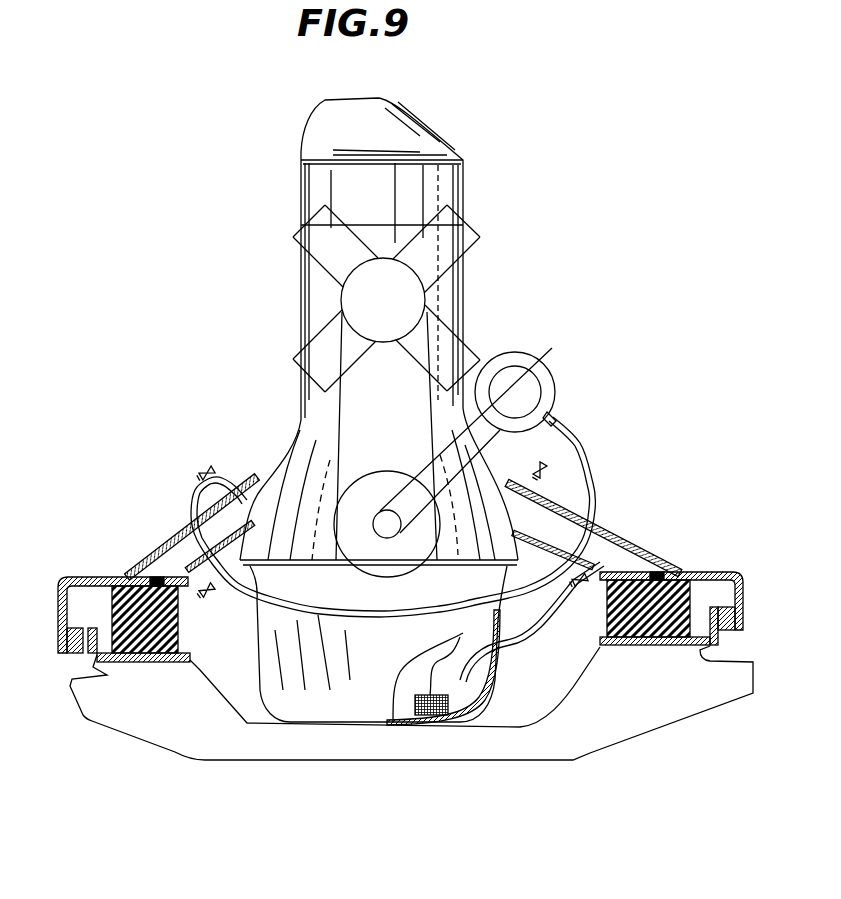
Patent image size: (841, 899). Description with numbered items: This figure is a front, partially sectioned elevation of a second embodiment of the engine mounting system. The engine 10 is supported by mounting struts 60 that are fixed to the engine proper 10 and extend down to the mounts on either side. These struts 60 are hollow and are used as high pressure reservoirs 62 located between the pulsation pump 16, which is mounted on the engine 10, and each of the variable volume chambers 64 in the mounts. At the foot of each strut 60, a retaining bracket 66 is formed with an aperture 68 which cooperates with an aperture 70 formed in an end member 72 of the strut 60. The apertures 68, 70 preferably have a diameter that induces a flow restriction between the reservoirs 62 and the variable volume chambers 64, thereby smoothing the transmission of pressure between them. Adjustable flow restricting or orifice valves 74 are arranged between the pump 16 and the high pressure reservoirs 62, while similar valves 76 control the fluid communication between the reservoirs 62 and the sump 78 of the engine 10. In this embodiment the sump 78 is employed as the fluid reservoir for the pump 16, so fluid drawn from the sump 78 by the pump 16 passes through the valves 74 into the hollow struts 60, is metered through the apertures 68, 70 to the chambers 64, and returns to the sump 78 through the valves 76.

The engine 10 is at (309, 320).
The pulsation pump 16 is at (515, 357).
The mounting struts 60 is at (177, 537).
The high pressure reservoirs 62 is at (135, 570).
The variable volume chambers 64 is at (137, 643).
The retaining bracket 66 is at (63, 640).
The aperture 68 is at (178, 656).
The aperture 70 is at (137, 567).
The end member 72 is at (158, 557).
The adjustable flow restricting valves 74 is at (213, 470).
The valves 76 is at (200, 597).
The sump 78 is at (410, 706).